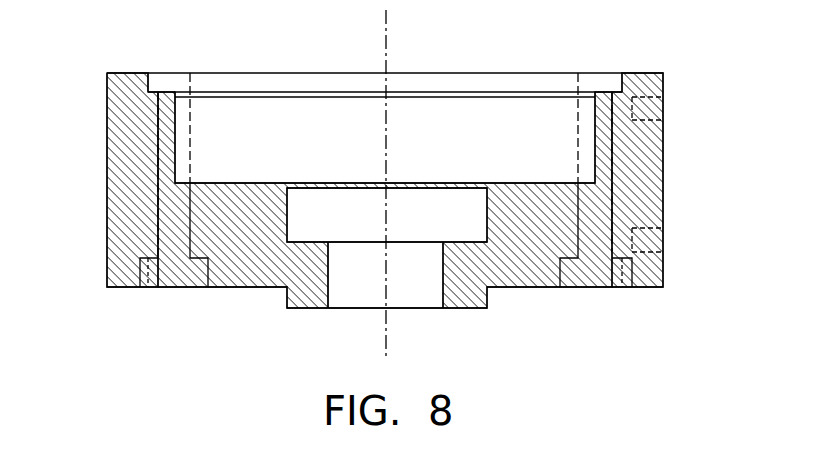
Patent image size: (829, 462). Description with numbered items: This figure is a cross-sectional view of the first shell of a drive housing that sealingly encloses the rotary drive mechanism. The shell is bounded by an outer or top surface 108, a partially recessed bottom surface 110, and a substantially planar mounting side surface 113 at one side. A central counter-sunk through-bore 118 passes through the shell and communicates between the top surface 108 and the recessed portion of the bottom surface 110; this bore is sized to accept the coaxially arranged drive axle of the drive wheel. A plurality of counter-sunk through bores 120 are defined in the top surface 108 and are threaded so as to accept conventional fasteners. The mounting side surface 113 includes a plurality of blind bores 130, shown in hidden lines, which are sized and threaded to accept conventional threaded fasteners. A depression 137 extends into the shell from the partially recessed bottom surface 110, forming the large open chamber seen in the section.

The outer surface 108 is at (504, 289).
The partially recessed bottom surface 110 is at (128, 73).
The mounting side surface 113 is at (664, 128).
The counter-sunk through-bore 118 is at (328, 272).
The counter-sunk through bores 120 is at (145, 268).
The blind bores 130 is at (663, 97).
The depression 137 is at (287, 138).